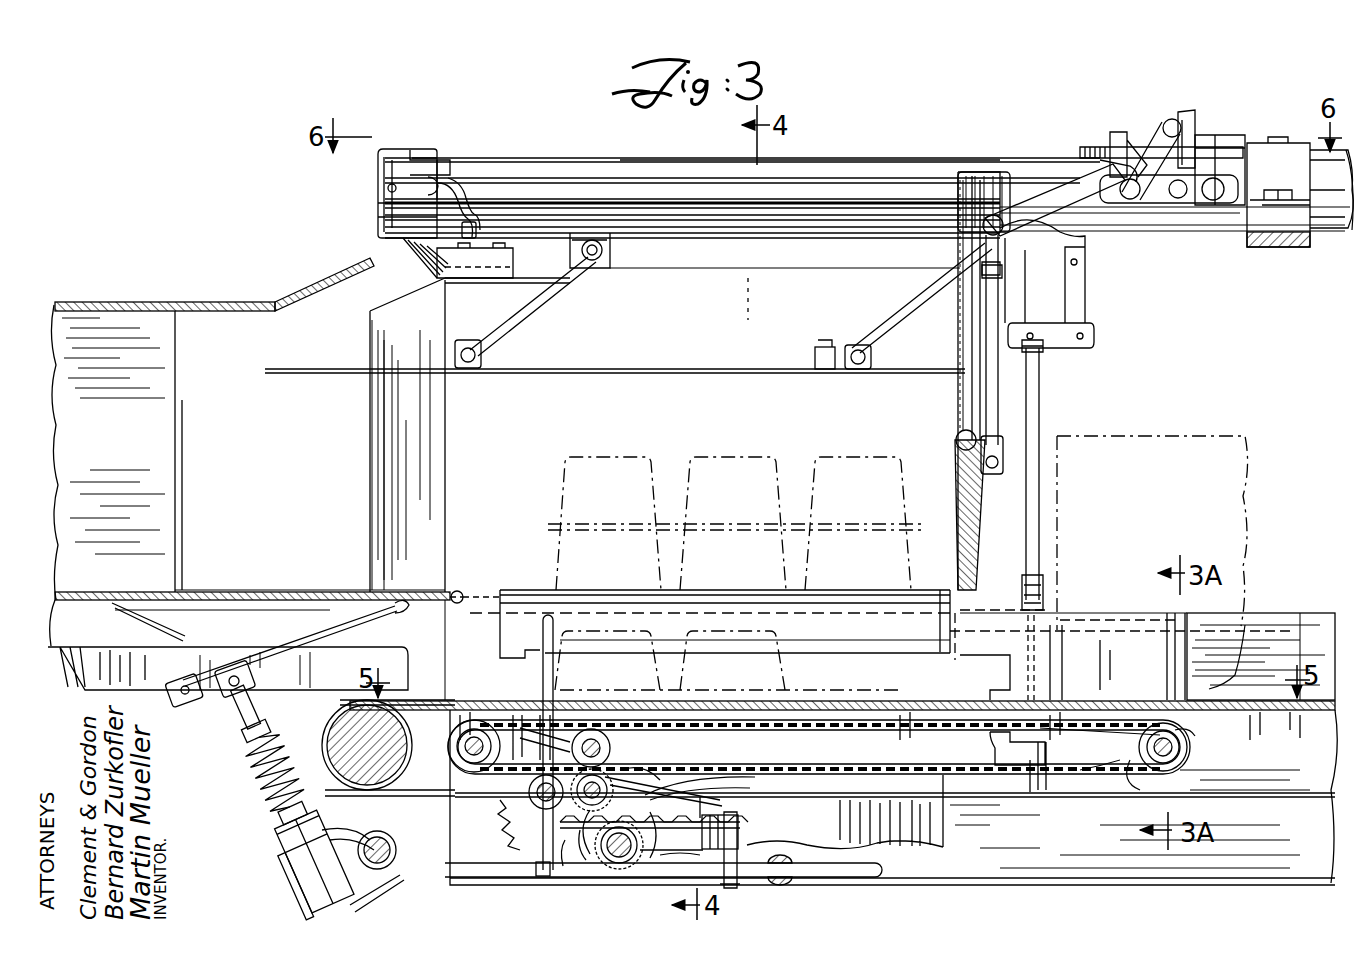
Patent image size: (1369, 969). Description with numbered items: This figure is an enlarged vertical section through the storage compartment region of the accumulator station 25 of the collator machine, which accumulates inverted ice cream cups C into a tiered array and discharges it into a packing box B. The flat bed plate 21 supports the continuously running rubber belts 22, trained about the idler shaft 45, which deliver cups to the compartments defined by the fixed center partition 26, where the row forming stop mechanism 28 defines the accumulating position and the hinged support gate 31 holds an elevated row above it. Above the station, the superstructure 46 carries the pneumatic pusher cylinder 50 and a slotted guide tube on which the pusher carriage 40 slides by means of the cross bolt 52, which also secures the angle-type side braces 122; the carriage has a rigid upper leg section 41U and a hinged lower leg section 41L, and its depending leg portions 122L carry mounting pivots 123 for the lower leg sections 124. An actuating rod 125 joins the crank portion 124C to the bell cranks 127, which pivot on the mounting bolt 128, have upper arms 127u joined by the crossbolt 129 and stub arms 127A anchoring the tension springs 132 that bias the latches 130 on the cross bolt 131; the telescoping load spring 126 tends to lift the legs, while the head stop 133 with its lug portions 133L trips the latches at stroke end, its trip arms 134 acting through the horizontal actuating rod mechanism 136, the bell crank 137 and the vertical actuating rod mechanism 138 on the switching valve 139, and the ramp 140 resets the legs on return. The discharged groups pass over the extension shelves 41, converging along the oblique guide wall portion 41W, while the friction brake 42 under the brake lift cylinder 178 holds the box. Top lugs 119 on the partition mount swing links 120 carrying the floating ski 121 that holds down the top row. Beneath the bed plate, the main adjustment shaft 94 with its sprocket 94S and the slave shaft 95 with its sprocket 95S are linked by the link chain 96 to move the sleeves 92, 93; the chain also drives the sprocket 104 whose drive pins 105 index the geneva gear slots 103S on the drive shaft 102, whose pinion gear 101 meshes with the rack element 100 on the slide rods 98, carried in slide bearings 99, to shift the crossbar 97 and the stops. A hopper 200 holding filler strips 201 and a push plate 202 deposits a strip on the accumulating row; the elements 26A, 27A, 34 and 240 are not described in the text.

The packing box B is at (130, 302).
The ice cream cups C is at (716, 454).
The bed plate 21 is at (1286, 710).
The rubber belts 22 is at (430, 650).
The accumulator station 25 is at (978, 628).
The center partition 26 is at (760, 308).
The frame member 26A is at (1124, 636).
The frame plate 27A is at (1328, 626).
The row forming stop mechanism 28 is at (542, 674).
The support gate 31 is at (860, 634).
The conveyor section 34 is at (906, 762).
The pusher carriage 40 is at (950, 396).
The outboard extension shelves 41 is at (310, 543).
The hinged lower leg section 41L is at (950, 568).
The rigid upper leg section 41U is at (955, 249).
The oblique guide wall portion 41W is at (385, 452).
The friction brake 42 is at (310, 627).
The idler shaft 45 is at (324, 728).
The superstructure 46 is at (853, 160).
The pneumatic pusher cylinder 50 is at (1328, 228).
The cross bolt 52 is at (1215, 200).
The front sleeves 92 is at (1138, 768).
The rear sleeves 93 is at (509, 774).
The main adjustment shaft 94 is at (1178, 758).
The sprocket 94S is at (1184, 740).
The slave shaft 95 is at (458, 758).
The sprocket 95S is at (498, 829).
The link chain 96 is at (824, 722).
The transverse crossbar 97 is at (540, 866).
The horizontal slide rods 98 is at (684, 870).
The slide bearings 99 is at (778, 880).
The horizontal rack element 100 is at (708, 826).
The pinion gear 101 is at (598, 863).
The drive shaft 102 is at (636, 865).
The geneva gear slots 103S is at (670, 794).
The sprocket 104 is at (640, 780).
The drive pins 105 is at (611, 776).
The top lugs 119 is at (612, 250).
The swing links 120 is at (550, 284).
The floating ski 121 is at (346, 368).
The side braces 122 is at (978, 188).
The depending leg portions 122L is at (948, 325).
The mounting pivots 123 is at (956, 444).
The lower leg sections 124 is at (973, 522).
The crank portion 124C is at (1002, 474).
The actuating rod 125 is at (992, 410).
The telescoping load spring 126 is at (1046, 346).
The bell cranks 127 is at (1118, 200).
The stub arms 127A is at (1070, 174).
The upper arms 127u is at (1172, 196).
The mounting bolt 128 is at (1105, 210).
The crossbolt 129 is at (1146, 156).
The latches 130 is at (1186, 156).
The cross bolt 131 is at (1200, 178).
The tension springs 132 is at (1120, 162).
The head stop 133 is at (392, 150).
The lug portions 133L is at (432, 160).
The trip arms 134 is at (466, 218).
The horizontal actuating rod mechanism 136 is at (834, 242).
The bell crank 137 is at (1082, 308).
The vertical actuating rod mechanism 138 is at (1040, 520).
The switching valve 139 is at (1038, 788).
The ramp 140 is at (1250, 142).
The brake lift cylinder 178 is at (300, 887).
The hopper 200 is at (1187, 462).
The filler strips 201 is at (997, 657).
The push plate 202 is at (1244, 586).
The pin 240 is at (1172, 116).